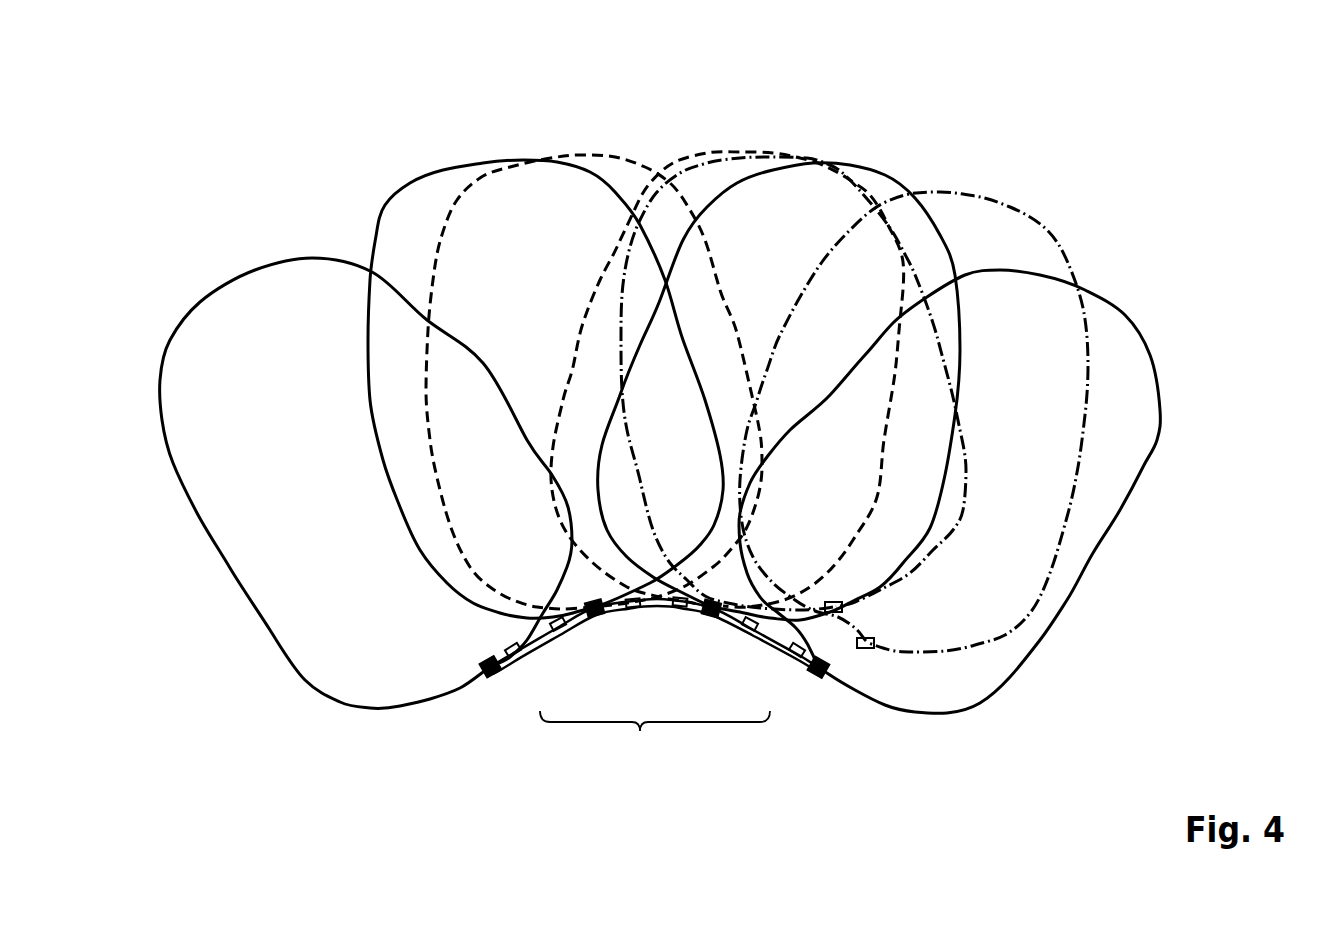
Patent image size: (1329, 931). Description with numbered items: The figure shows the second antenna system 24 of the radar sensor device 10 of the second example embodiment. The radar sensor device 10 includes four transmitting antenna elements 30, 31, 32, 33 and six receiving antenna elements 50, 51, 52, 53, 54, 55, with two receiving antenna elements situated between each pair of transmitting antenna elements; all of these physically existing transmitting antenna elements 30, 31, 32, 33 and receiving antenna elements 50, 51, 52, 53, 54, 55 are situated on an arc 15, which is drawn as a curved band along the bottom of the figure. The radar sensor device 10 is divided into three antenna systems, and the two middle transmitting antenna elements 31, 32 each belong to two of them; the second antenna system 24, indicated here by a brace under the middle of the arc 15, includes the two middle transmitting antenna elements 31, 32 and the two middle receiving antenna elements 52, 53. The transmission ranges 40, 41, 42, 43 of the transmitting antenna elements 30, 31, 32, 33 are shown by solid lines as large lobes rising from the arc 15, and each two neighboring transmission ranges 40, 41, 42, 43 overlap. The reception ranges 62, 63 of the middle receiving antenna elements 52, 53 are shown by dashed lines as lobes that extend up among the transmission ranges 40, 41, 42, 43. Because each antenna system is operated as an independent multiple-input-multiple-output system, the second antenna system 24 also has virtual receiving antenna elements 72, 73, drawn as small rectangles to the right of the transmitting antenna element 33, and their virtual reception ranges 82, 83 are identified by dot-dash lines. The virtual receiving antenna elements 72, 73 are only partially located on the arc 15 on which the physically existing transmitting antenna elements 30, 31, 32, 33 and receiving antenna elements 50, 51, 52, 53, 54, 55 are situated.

The radar sensor device 10 is at (1154, 146).
The arc 15 is at (608, 615).
The second antenna system 24 is at (655, 735).
The transmitting antenna element 30 is at (494, 680).
The transmitting antenna element 31 is at (597, 616).
The transmitting antenna element 32 is at (713, 616).
The transmitting antenna element 33 is at (818, 678).
The transmission range 40 is at (195, 318).
The transmission range 41 is at (470, 166).
The transmission range 42 is at (868, 178).
The transmission range 43 is at (1097, 298).
The receiving antenna element 50 is at (520, 658).
The receiving antenna element 51 is at (560, 631).
The receiving antenna element 52 is at (634, 610).
The receiving antenna element 53 is at (680, 609).
The receiving antenna element 54 is at (750, 631).
The receiving antenna element 55 is at (794, 658).
The reception range 62 is at (580, 155).
The reception range 63 is at (740, 152).
The virtual receiving antenna element 72 is at (836, 614).
The virtual receiving antenna element 73 is at (867, 650).
The virtual reception range 82 is at (990, 205).
The virtual reception range 83 is at (820, 158).